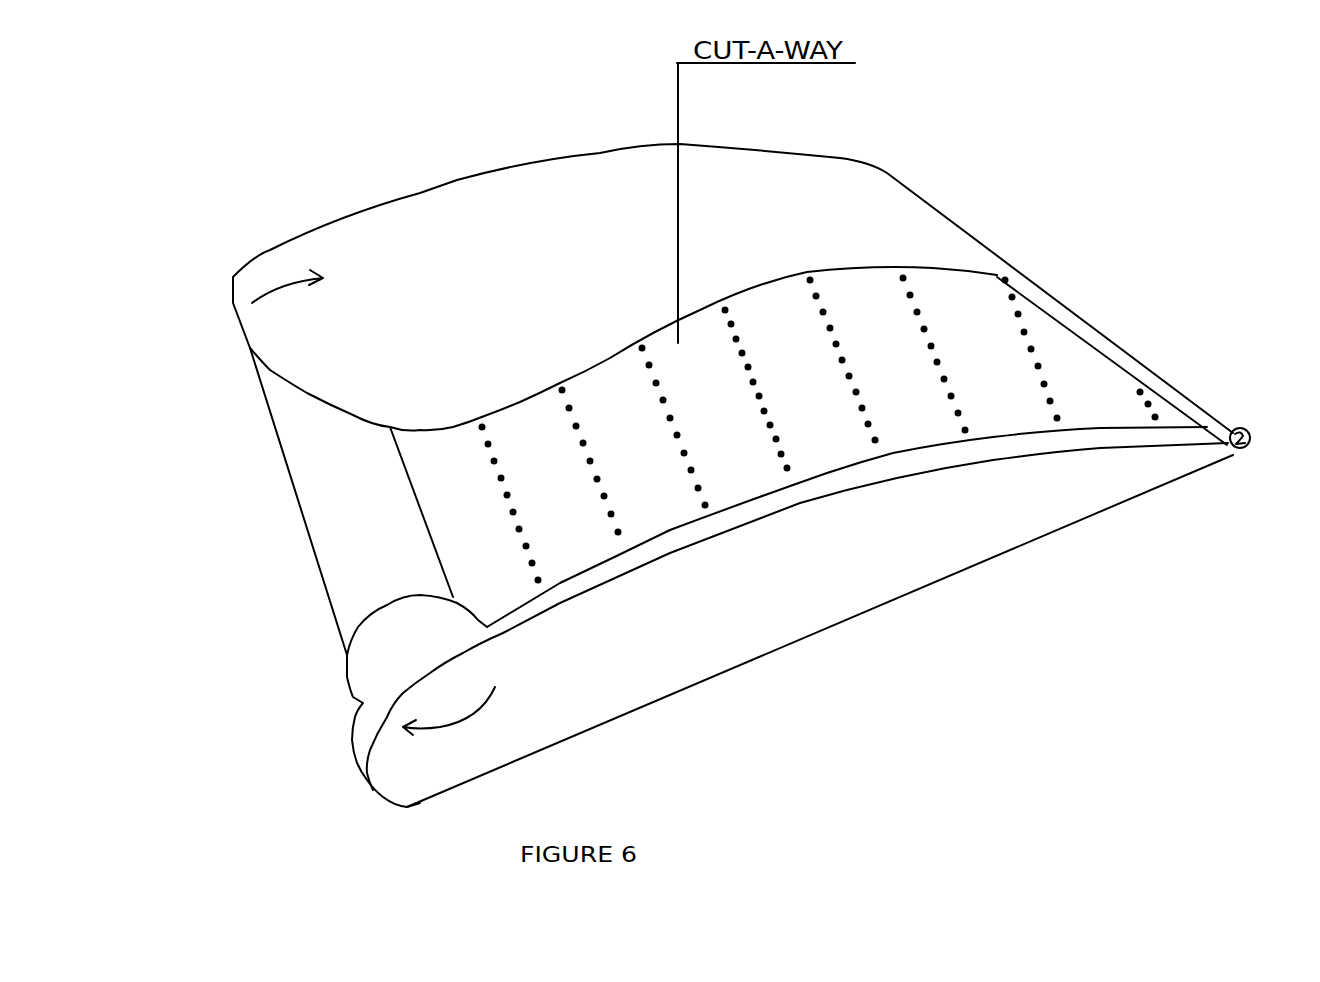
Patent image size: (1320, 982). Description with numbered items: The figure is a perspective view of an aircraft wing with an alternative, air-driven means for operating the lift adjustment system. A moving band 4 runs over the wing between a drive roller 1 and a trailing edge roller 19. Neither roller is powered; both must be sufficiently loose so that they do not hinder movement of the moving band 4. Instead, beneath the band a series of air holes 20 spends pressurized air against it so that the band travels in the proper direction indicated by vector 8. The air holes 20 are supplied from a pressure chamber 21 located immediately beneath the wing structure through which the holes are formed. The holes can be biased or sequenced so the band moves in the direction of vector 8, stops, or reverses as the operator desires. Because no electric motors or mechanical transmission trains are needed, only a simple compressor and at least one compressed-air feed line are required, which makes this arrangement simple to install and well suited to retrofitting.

The drive roller 1 is at (290, 588).
The moving band 4 is at (421, 230).
The vector 8 is at (254, 302).
The trailing edge roller 19 is at (1140, 370).
The air holes 20 is at (691, 470).
The pressure chamber 21 is at (998, 695).